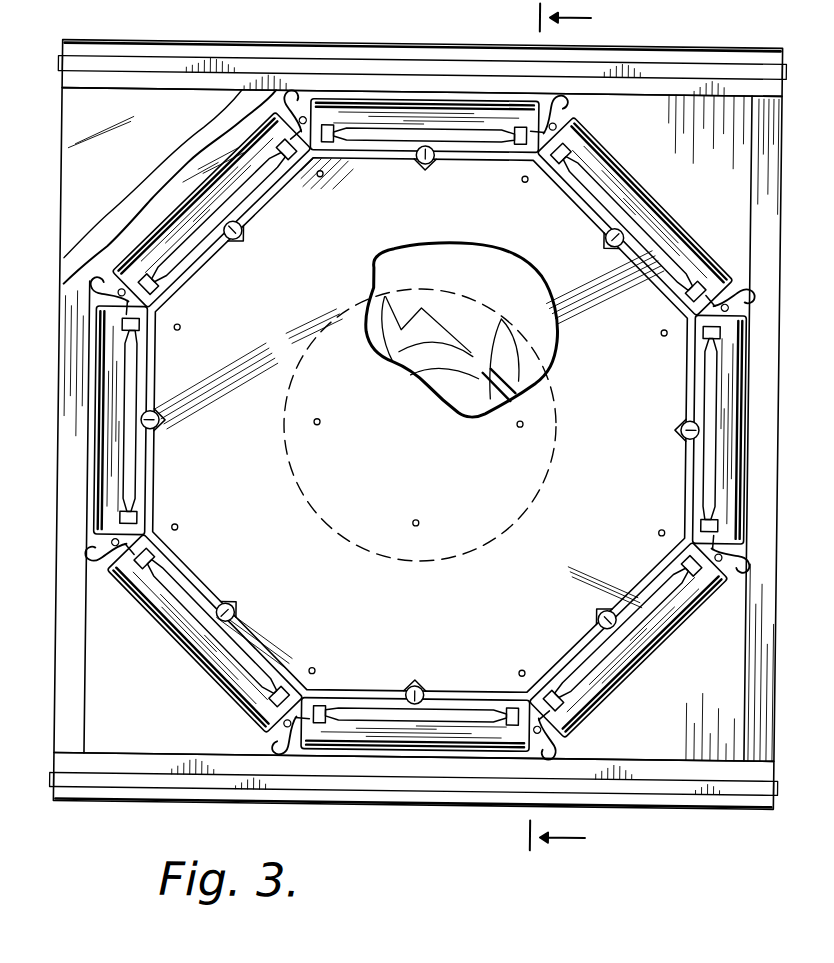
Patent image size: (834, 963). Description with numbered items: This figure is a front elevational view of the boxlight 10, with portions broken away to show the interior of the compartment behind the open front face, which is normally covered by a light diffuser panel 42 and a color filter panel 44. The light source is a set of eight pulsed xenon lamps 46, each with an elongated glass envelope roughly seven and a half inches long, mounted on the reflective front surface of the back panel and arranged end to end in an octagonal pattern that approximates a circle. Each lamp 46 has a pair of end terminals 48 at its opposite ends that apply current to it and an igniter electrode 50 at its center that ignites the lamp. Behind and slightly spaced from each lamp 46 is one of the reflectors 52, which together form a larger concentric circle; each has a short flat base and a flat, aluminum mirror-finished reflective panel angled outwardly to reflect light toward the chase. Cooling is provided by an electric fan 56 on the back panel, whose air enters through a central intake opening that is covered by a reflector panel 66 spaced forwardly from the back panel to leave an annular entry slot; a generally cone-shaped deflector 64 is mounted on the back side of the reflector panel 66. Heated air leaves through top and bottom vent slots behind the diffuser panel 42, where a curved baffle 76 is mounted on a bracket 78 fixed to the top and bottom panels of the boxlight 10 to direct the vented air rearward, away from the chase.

The boxlight 10 is at (706, 804).
The light diffuser panel 42 is at (127, 211).
The color filter panel 44 is at (121, 100).
The pulsed xenon lamps 46 is at (371, 140).
The end terminals 48 is at (296, 98).
The igniter electrode 50 is at (432, 160).
The reflectors 52 is at (459, 104).
The electric fan 56 is at (438, 392).
The deflector 64 is at (527, 372).
The reflector panel 66 is at (643, 290).
The curved baffle 76 is at (689, 46).
The bracket 78 is at (766, 90).